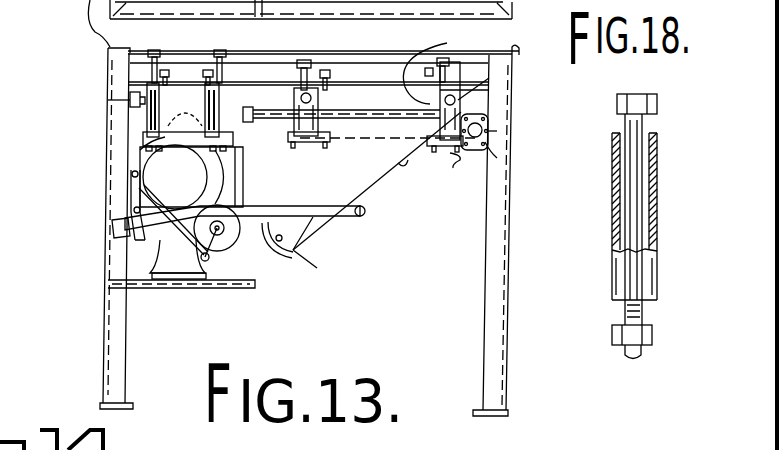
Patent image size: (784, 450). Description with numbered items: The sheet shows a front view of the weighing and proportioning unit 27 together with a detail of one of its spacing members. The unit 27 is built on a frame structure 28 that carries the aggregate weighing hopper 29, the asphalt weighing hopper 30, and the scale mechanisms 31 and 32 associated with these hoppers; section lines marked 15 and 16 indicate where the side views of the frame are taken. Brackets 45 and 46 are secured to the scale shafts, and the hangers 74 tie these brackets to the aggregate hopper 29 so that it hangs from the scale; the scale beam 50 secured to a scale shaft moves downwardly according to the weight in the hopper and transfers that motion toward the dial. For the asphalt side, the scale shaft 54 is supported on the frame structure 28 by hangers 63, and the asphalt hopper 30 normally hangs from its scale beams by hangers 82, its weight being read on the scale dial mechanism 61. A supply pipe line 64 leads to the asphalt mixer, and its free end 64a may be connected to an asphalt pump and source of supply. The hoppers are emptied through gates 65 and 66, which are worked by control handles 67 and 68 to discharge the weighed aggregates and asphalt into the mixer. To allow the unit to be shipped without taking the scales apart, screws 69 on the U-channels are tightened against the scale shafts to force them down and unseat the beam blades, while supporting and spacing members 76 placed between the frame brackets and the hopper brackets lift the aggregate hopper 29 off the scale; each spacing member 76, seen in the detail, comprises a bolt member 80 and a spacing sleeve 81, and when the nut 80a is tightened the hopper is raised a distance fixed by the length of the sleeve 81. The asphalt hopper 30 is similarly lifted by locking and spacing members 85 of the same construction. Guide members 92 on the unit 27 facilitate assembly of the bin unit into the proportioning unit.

In FIG. 13, the section line 15 is at (237, 46).
In FIG. 13, the section line 16 is at (78, 65).
In FIG. 13, the weighing and proportioning unit 27 is at (505, 252).
In FIG. 13, the frame structure 28 is at (500, 140).
In FIG. 13, the aggregate weighing hopper 29 is at (400, 163).
In FIG. 13, the asphalt weighing hopper 30 is at (140, 188).
In FIG. 13, the scale mechanism 31 is at (375, 112).
In FIG. 13, the scale mechanism 32 is at (130, 100).
In FIG. 13, the bracket 45 is at (352, 98).
In FIG. 13, the bracket 46 is at (445, 58).
In FIG. 13, the scale beam 50 is at (247, 104).
In FIG. 13, the scale shaft 54 is at (137, 107).
In FIG. 13, the scale dial mechanism 61 is at (132, 197).
In FIG. 13, the hanger 63 is at (140, 62).
In FIG. 13, the supply pipe line 64 is at (360, 193).
In FIG. 13, the free end 64a is at (497, 158).
In FIG. 13, the gate or valve 65 is at (293, 250).
In FIG. 13, the gate or valve 66 is at (232, 245).
In FIG. 13, the control handle 67 is at (130, 242).
In FIG. 13, the control handle 68 is at (143, 222).
In FIG. 13, the screw 69 is at (305, 92).
In FIG. 13, the hanger 74 is at (316, 144).
In FIG. 13, the supporting and spacing member 76 is at (460, 115).
In FIG. 18, the supporting and spacing member 76 is at (657, 200).
In FIG. 18, the bolt member 80 is at (640, 130).
In FIG. 18, the nut 80a is at (650, 335).
In FIG. 18, the spacing sleeve 81 is at (640, 275).
In FIG. 13, the hanger 82 is at (140, 150).
In FIG. 13, the locking and spacing member 85 is at (183, 143).
In FIG. 13, the guide member 92 is at (519, 48).